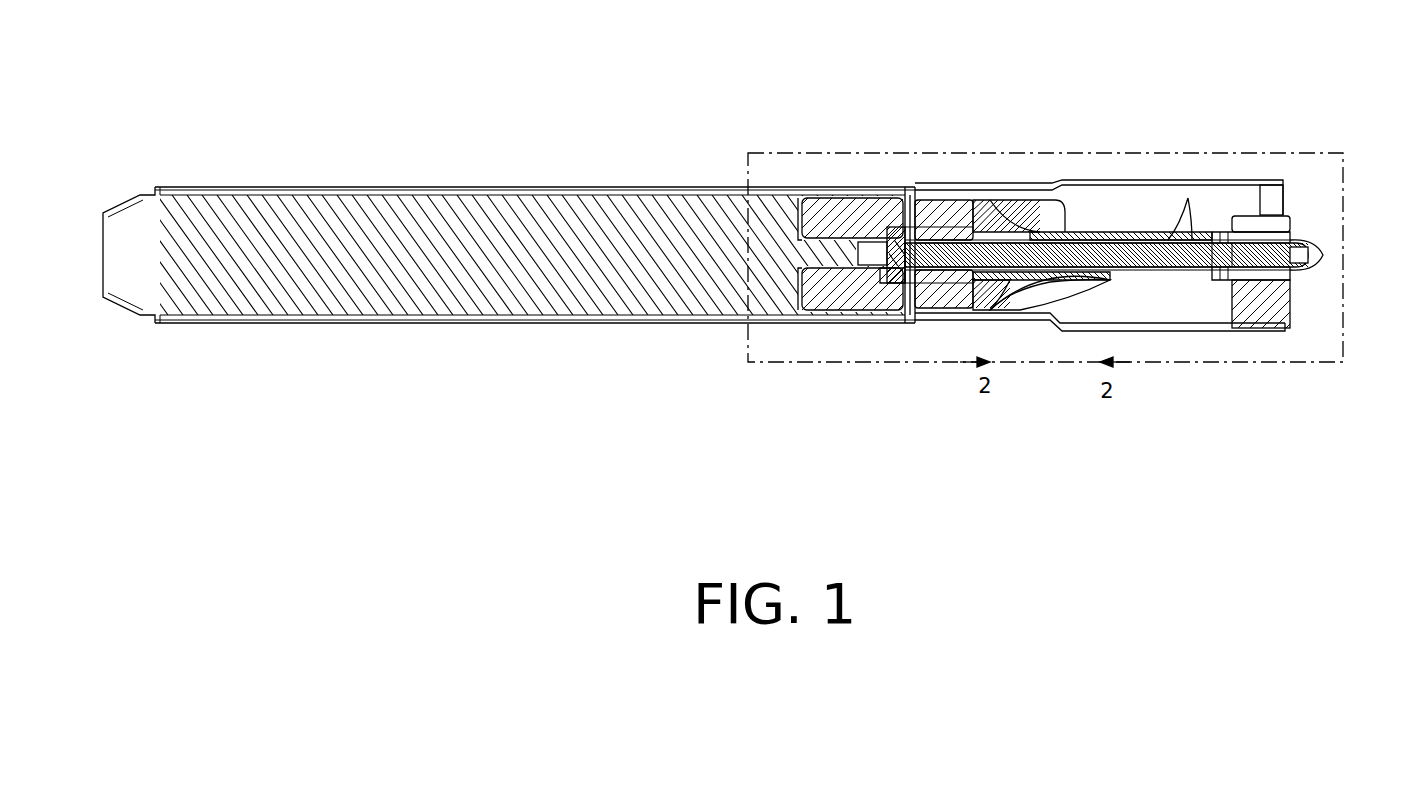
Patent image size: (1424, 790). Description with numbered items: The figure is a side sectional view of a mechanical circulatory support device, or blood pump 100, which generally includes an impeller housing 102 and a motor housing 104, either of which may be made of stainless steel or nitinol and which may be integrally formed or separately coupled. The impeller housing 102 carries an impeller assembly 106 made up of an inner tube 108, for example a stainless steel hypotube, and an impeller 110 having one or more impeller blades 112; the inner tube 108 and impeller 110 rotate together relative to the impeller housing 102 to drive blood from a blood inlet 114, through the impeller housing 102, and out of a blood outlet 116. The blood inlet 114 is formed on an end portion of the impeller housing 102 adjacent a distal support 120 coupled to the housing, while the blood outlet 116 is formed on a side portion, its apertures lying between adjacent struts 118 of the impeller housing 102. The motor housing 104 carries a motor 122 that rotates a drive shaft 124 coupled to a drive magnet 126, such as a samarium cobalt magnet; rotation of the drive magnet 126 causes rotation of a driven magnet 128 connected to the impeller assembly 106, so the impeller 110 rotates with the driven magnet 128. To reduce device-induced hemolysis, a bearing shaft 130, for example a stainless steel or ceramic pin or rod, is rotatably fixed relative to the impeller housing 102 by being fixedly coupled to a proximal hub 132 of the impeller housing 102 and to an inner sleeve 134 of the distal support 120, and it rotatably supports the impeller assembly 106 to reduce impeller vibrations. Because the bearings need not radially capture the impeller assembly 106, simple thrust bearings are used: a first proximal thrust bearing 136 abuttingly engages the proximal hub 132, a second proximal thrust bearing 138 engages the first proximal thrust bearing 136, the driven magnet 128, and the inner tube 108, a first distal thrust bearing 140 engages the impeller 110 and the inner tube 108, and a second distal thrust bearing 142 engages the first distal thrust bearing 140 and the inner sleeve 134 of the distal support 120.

The blood pump 100 is at (383, 118).
The impeller housing 102 is at (1065, 183).
The motor housing 104 is at (460, 187).
The impeller assembly 106 is at (1103, 232).
The inner tube 108 is at (1143, 240).
The impeller 110 is at (1208, 238).
The impeller blades 112 is at (1178, 200).
The blood inlet 114 is at (1283, 200).
The blood outlet 116 is at (958, 190).
The struts 118 is at (1010, 188).
The distal support 120 is at (1322, 250).
The motor 122 is at (520, 205).
The drive shaft 124 is at (833, 198).
The drive magnet 126 is at (887, 188).
The driven magnet 128 is at (938, 195).
The bearing shaft 130 is at (1141, 285).
The proximal hub 132 is at (887, 275).
The inner sleeve 134 is at (1268, 300).
The first proximal thrust bearing 136 is at (896, 283).
The second proximal thrust bearing 138 is at (925, 283).
The first distal thrust bearing 140 is at (1210, 282).
The second distal thrust bearing 142 is at (1225, 290).